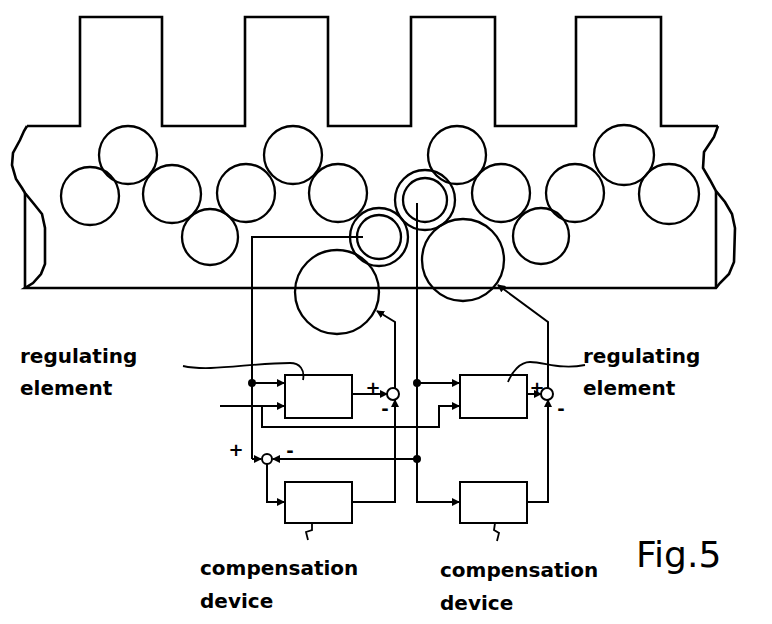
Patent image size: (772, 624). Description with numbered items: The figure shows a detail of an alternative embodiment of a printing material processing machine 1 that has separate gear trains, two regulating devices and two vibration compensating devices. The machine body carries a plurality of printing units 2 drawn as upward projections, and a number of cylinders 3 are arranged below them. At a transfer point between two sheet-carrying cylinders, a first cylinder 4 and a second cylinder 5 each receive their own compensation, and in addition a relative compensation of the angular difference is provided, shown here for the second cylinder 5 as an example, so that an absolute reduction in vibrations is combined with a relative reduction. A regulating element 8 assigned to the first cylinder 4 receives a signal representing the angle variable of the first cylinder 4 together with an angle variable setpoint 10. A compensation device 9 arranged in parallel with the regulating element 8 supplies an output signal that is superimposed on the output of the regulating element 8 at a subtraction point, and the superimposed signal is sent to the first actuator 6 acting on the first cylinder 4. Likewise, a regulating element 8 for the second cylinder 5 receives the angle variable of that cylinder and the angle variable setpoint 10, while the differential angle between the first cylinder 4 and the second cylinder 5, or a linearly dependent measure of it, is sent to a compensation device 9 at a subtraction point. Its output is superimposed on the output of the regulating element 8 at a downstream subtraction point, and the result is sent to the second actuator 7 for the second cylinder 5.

The printing material processing machine 1 is at (373, 207).
The printing unit 2 is at (372, 71).
The cylinder 3 is at (380, 195).
The first cylinder 4 is at (425, 200).
The second cylinder 5 is at (379, 237).
The first actuator 6 is at (463, 260).
The second actuator 7 is at (337, 292).
The regulating element 8 is at (406, 396).
The compensation device 9 is at (406, 502).
The angle variable setpoint 10 is at (327, 415).